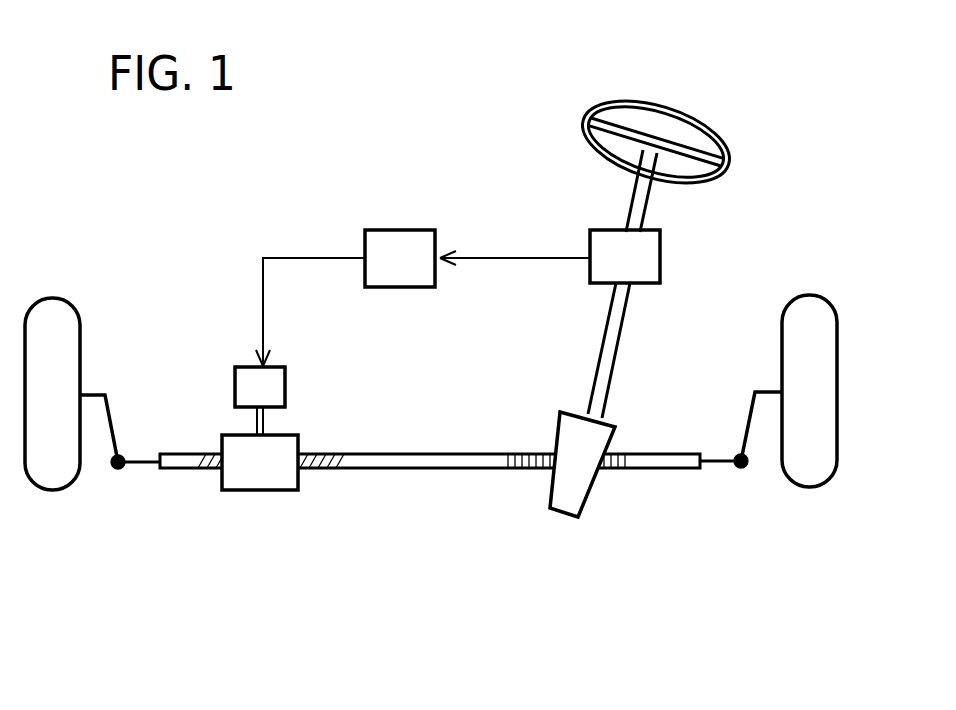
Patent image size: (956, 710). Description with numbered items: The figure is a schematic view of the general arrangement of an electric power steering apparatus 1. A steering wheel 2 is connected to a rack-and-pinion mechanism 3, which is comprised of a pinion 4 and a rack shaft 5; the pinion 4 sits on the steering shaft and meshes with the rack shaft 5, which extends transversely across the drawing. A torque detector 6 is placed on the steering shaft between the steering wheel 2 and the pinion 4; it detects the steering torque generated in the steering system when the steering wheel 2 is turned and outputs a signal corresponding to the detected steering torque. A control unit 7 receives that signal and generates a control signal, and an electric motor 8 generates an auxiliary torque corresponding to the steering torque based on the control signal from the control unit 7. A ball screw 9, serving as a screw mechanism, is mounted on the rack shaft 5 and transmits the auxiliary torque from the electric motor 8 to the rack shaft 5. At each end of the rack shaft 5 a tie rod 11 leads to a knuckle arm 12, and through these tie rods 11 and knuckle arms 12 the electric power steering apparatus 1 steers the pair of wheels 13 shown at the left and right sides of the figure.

The electric power steering apparatus 1 is at (795, 152).
The steering wheel 2 is at (582, 128).
The rack-and-pinion mechanism 3 is at (558, 613).
The pinion 4 is at (566, 497).
The rack shaft 5 is at (450, 480).
The torque detector 6 is at (605, 230).
The control unit 7 is at (393, 230).
The electric motor 8 is at (285, 387).
The ball screw 9 is at (272, 490).
The tie rod 11 is at (148, 466).
The knuckle arm 12 is at (113, 422).
The wheel 13 is at (80, 347).